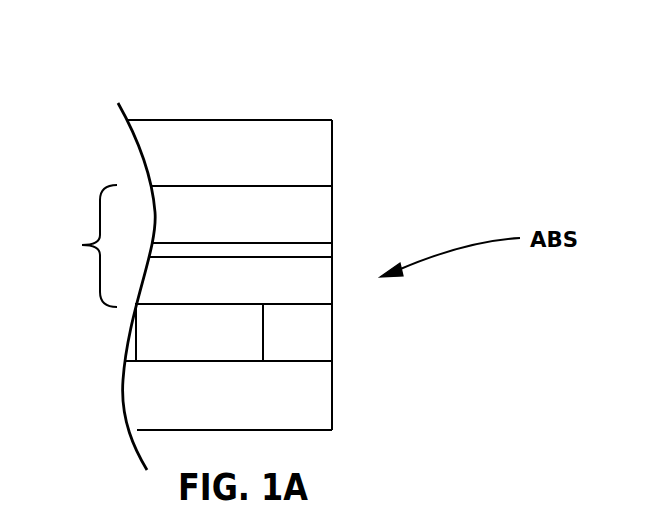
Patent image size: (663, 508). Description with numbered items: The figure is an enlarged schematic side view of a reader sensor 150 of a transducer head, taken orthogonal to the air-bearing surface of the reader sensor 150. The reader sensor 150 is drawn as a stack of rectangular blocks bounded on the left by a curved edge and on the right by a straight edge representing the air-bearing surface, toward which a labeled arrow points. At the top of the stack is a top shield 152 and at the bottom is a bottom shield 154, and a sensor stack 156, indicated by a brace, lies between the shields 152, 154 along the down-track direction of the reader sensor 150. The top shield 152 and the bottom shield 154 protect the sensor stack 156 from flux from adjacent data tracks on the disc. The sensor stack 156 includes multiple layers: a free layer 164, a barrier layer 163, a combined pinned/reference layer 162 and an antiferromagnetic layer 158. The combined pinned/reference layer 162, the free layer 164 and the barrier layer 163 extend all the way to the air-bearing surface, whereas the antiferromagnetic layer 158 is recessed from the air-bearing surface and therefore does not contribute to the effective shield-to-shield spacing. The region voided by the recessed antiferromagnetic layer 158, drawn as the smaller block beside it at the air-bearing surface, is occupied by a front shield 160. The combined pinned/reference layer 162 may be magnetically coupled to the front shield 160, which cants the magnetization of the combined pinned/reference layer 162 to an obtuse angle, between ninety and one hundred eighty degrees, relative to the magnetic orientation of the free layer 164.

The reader sensor 150 is at (295, 97).
The top shield 152 is at (333, 150).
The bottom shield 154 is at (333, 393).
The sensor stack 156 is at (77, 246).
The AFM layer 158 is at (205, 345).
The front shield 160 is at (333, 336).
The combined PL/RL 162 is at (333, 289).
The barrier layer 163 is at (333, 249).
The free layer 164 is at (333, 212).